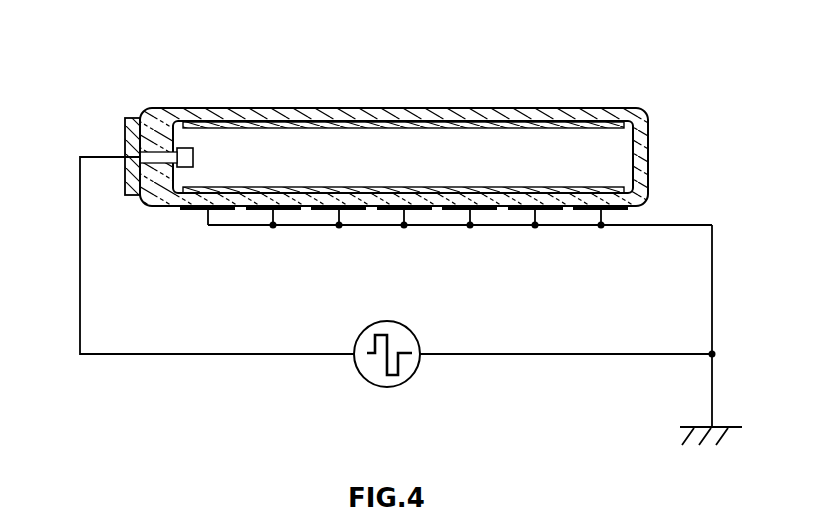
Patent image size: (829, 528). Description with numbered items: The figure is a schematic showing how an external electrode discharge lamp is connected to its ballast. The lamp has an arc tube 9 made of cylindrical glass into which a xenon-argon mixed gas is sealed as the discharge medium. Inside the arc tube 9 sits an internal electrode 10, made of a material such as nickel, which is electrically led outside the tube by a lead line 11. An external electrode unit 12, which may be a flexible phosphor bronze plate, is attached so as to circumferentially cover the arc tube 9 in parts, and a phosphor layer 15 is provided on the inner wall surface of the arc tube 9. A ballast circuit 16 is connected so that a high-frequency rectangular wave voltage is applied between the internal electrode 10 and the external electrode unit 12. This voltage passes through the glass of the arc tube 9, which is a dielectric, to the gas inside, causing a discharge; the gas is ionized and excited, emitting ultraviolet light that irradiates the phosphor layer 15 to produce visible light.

The arc tube 9 is at (395, 117).
The internal electrode 10 is at (190, 148).
The lead line 11 is at (150, 158).
The external electrode unit 12 is at (547, 203).
The phosphor layer 15 is at (520, 123).
The ballast circuit 16 is at (418, 367).